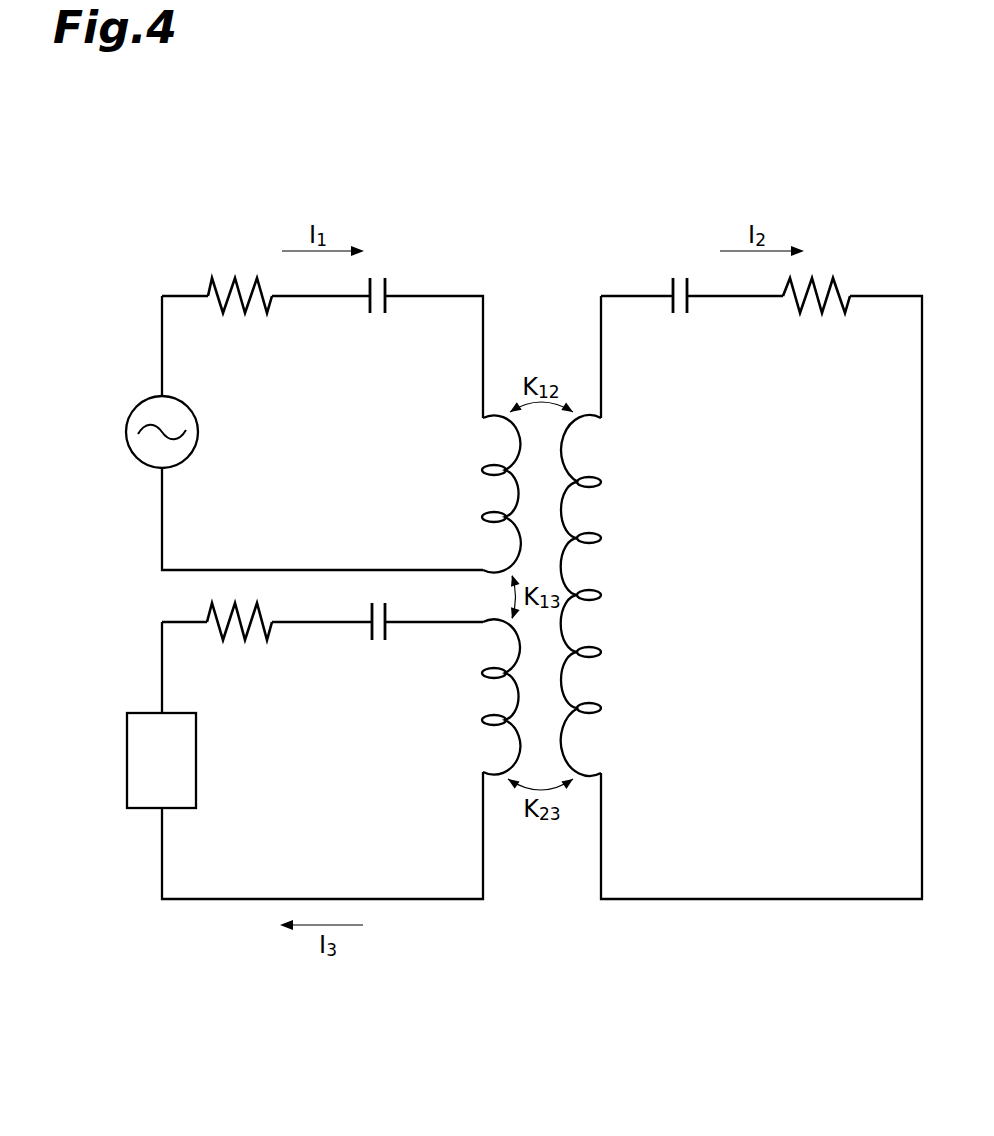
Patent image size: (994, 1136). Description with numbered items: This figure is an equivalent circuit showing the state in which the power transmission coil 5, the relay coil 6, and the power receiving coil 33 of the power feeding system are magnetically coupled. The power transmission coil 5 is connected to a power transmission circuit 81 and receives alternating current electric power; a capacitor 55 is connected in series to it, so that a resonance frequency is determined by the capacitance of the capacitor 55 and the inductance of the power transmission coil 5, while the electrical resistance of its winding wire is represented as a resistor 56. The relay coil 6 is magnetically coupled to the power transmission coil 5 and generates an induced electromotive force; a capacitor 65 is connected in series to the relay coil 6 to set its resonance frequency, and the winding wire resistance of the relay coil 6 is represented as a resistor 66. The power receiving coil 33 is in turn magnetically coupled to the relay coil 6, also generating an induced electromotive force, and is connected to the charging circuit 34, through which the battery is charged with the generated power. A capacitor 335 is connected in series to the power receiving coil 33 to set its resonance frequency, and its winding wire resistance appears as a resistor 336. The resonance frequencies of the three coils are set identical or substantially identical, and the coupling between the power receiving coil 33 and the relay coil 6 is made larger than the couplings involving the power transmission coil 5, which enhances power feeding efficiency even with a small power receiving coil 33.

The power transmission coil 5 is at (484, 468).
The relay coil 6 is at (602, 596).
The power receiving coil 33 is at (482, 721).
The charging circuit 34 is at (127, 760).
The capacitor 55 is at (388, 287).
The resistor 56 is at (206, 289).
The capacitor 65 is at (670, 288).
The resistor 66 is at (843, 288).
The power transmission circuit 81 is at (126, 432).
The capacitor 335 is at (370, 633).
The resistor 336 is at (272, 633).